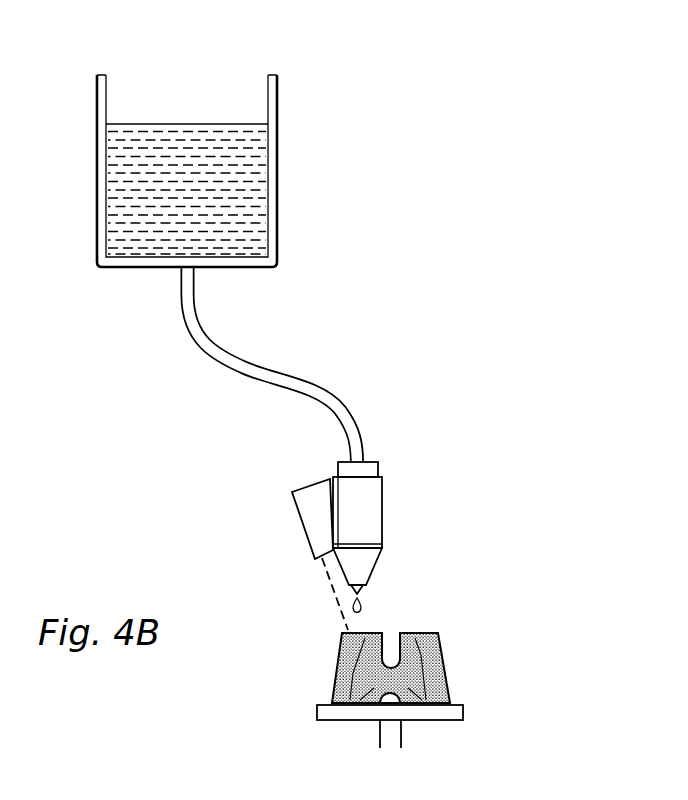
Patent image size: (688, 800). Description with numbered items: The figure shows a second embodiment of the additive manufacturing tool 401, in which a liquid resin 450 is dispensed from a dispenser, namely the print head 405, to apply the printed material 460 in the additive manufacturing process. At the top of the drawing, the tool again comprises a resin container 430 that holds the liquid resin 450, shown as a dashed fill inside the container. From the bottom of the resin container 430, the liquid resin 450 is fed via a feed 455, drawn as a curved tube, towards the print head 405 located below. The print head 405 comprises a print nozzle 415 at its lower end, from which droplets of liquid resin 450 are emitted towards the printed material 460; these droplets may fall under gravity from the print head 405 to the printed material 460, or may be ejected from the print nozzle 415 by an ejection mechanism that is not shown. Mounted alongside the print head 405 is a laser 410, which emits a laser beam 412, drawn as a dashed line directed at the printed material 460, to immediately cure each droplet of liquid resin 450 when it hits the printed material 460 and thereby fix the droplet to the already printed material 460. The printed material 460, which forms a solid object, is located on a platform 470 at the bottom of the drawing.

The additive manufacturing tool 401 is at (460, 230).
The print head 405 is at (373, 503).
The laser 410 is at (311, 511).
The laser beam 412 is at (333, 587).
The print nozzle 415 is at (363, 593).
The resin container 430 is at (278, 174).
The liquid resin 450 is at (195, 148).
The feed 455 is at (333, 388).
The printed material 460 is at (427, 653).
The platform 470 is at (460, 715).